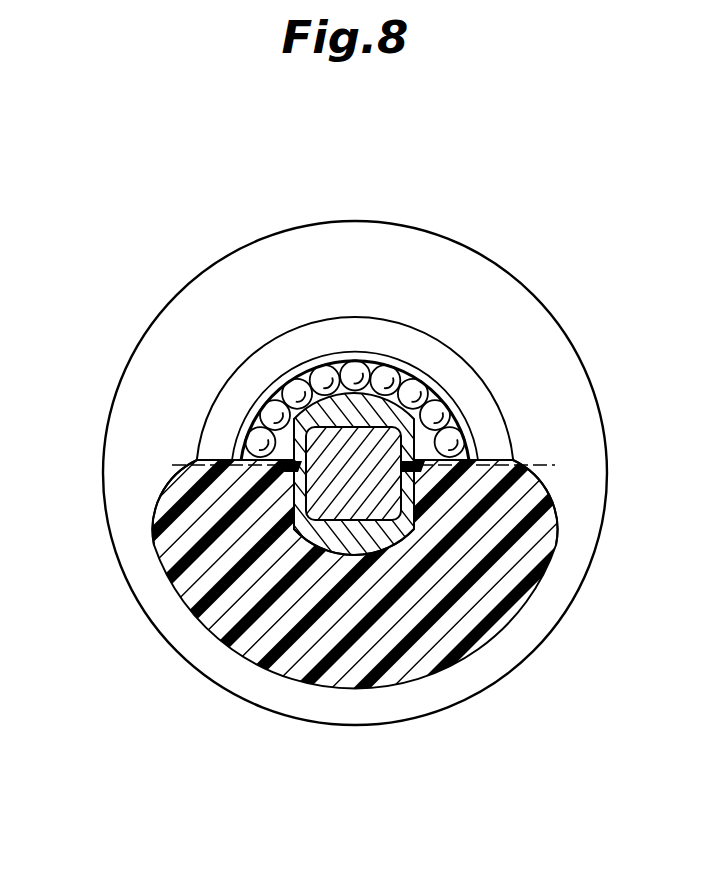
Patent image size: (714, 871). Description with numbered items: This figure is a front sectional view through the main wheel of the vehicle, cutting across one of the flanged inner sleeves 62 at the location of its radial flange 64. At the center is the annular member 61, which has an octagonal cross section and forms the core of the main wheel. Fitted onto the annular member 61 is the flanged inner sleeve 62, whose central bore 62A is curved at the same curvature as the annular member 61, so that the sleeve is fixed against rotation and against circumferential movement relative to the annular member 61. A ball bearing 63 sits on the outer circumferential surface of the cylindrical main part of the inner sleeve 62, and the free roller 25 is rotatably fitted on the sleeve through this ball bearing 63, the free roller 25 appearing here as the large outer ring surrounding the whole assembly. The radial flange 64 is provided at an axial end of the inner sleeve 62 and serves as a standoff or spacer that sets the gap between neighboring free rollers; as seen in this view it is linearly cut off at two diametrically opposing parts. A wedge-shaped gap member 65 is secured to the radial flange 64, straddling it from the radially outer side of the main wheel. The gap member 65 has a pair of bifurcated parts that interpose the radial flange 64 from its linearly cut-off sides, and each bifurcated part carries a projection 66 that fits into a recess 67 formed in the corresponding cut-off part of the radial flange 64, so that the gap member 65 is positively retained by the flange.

The free roller 25 is at (289, 256).
The annular member 61 is at (360, 500).
The flanged inner sleeve 62 is at (316, 399).
The central bore 62A is at (390, 427).
The ball bearing 63 is at (357, 363).
The radial flange 64 is at (400, 531).
The gap member 65 is at (490, 612).
The projection 66 is at (290, 462).
The recess 67 is at (201, 461).